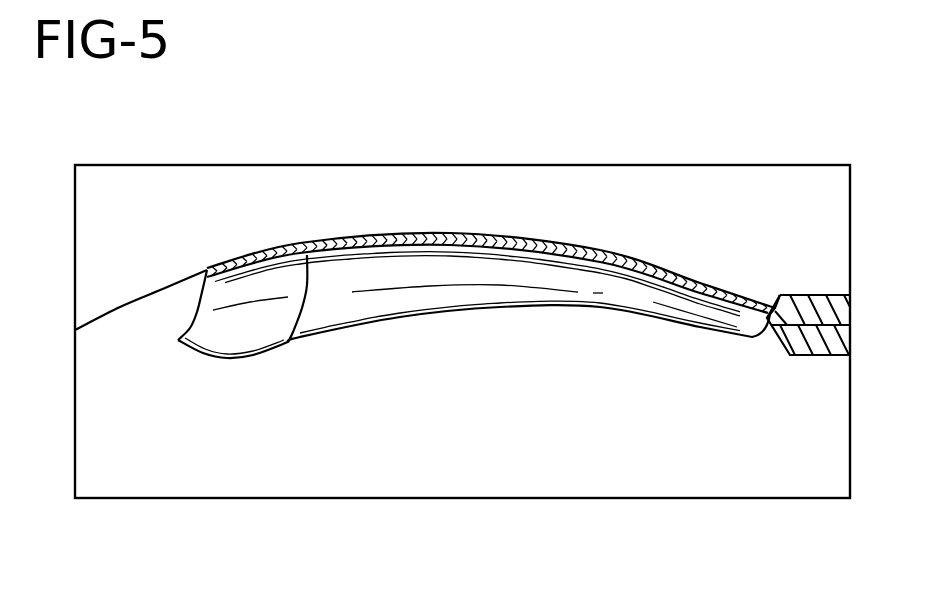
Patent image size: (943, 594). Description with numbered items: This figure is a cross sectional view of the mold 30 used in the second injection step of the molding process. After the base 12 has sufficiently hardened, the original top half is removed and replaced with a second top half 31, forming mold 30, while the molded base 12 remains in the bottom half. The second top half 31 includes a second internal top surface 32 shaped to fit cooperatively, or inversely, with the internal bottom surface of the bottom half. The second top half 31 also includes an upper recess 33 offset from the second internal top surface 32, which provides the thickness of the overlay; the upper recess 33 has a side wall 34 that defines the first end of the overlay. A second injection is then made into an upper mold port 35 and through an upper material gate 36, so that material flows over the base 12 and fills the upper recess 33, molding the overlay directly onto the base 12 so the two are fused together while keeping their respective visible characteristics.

The base 12 is at (590, 265).
The mold 30 is at (367, 148).
The second top half 31 is at (617, 190).
The second internal top surface 32 is at (122, 307).
The upper recess 33 is at (470, 233).
The side wall 34 is at (207, 277).
The upper mold port 35 is at (850, 312).
The upper material gate 36 is at (773, 310).